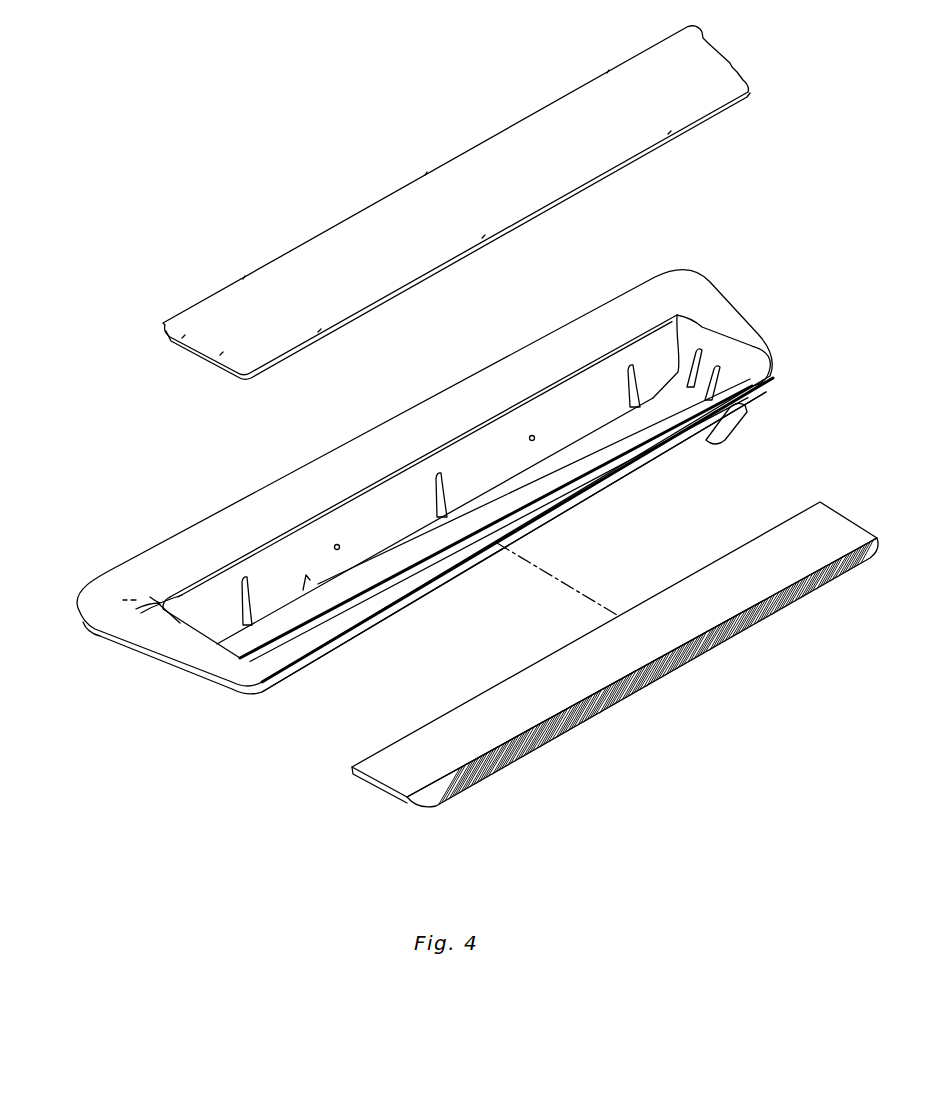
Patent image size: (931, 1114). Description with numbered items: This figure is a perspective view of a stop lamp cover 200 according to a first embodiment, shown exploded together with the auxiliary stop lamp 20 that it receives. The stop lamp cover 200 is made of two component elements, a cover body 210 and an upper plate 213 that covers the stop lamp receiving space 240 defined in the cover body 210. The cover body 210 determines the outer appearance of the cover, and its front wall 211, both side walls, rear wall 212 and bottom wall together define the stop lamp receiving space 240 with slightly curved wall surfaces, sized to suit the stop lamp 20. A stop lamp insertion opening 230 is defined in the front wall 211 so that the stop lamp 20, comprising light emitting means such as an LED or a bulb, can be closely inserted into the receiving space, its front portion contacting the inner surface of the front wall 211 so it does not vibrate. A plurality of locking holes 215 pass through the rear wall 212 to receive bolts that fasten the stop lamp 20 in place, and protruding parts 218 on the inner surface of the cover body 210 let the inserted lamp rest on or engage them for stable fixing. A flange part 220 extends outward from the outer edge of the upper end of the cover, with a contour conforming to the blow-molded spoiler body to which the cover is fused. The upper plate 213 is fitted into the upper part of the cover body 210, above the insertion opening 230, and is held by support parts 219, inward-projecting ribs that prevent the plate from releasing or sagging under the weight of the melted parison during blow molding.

The stop lamp cover 200 is at (118, 412).
The upper plate 213 is at (582, 104).
The rear wall 212 is at (642, 352).
The flange part 220 is at (215, 530).
The protruding parts 218 is at (712, 292).
The support parts 219 is at (740, 362).
The locking holes 215 is at (337, 547).
The front wall 211 is at (733, 415).
The stop lamp insertion opening 230 is at (580, 498).
The stop lamp receiving space 240 is at (308, 582).
The cover body 210 is at (229, 690).
The stop lamp 20 is at (385, 777).